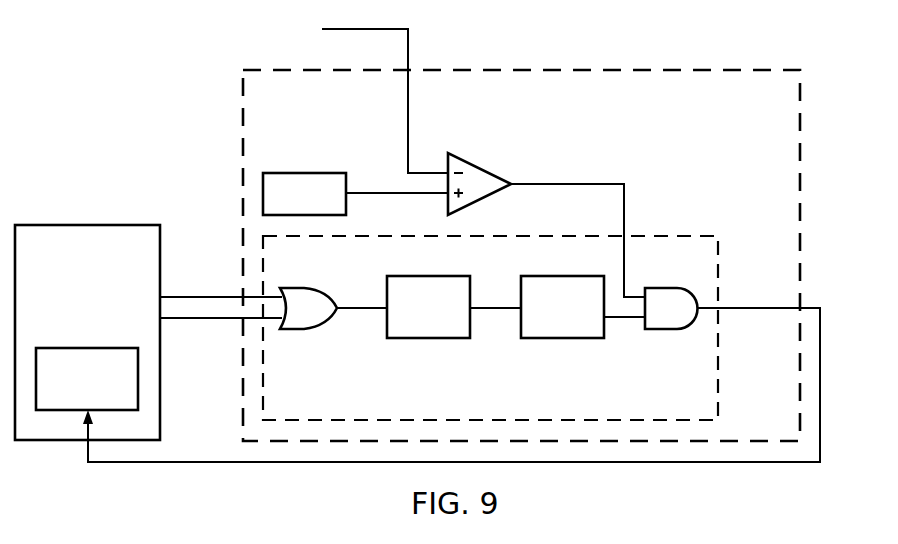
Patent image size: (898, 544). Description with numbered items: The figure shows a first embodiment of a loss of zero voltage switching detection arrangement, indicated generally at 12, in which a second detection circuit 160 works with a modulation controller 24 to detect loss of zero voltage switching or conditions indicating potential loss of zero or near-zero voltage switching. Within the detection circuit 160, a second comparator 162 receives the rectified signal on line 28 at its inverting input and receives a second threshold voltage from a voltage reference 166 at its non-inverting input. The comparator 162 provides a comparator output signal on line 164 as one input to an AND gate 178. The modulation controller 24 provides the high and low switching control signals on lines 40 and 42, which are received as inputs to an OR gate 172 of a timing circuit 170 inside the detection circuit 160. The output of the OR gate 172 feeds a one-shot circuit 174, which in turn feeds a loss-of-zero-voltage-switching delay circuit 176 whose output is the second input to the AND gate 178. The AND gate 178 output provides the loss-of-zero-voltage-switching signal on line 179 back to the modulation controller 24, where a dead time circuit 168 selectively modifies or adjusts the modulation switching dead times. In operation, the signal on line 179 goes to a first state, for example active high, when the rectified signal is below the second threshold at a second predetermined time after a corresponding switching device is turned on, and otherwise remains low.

The power converter system 12 is at (124, 87).
The modulation controller 24 is at (78, 225).
The line carrying rectified signal 28 is at (408, 52).
The line for high switching control signal HD 40 is at (201, 295).
The line for low switching control signal LD 42 is at (201, 321).
The second detection circuit 160 is at (744, 64).
The second comparator 162 is at (481, 166).
The line carrying comparator output signal 164 is at (566, 182).
The voltage reference 166 is at (303, 173).
The dead time circuit 168 is at (78, 348).
The timing circuit 170 is at (663, 230).
The OR gate 172 is at (301, 330).
The 1-shot circuit 174 is at (428, 340).
The LOZVS delay circuit 176 is at (565, 340).
The AND gate 178 is at (661, 330).
The line carrying LOZVS signal 179 is at (760, 310).